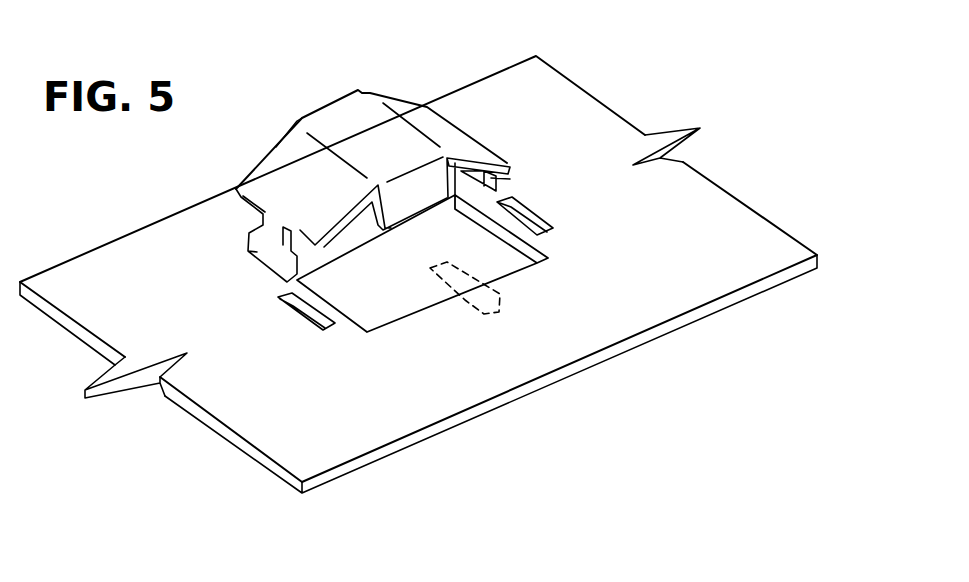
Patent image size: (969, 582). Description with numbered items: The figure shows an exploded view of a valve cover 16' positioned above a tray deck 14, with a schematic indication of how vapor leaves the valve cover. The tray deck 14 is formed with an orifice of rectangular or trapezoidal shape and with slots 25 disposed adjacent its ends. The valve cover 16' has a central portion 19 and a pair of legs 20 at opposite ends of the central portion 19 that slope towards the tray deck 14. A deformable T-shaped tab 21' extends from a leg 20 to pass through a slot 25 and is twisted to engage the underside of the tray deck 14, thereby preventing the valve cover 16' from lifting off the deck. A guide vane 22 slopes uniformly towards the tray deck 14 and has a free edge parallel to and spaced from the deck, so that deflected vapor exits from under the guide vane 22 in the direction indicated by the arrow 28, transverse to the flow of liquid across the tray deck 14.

The tray deck 14 is at (119, 262).
The valve cover 16' is at (378, 149).
The central portion 19 is at (348, 123).
The leg 20 is at (415, 112).
The deformable T-shaped tab 21' is at (378, 217).
The guide vane 22 is at (400, 193).
The slot 25 is at (545, 225).
The arrow 28 is at (470, 306).